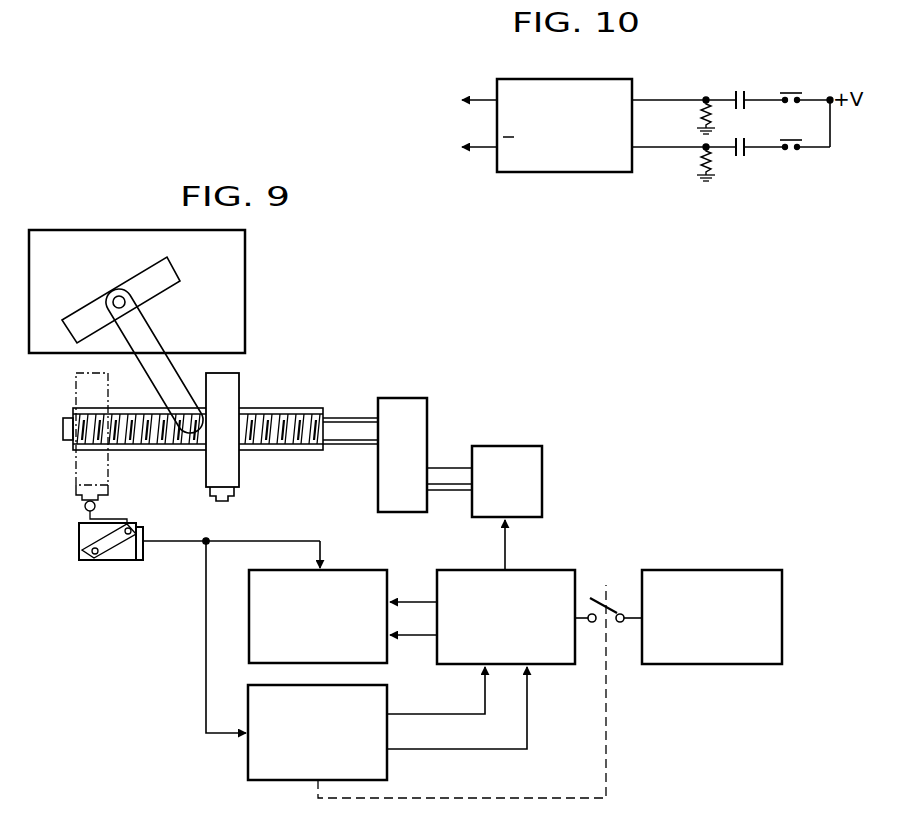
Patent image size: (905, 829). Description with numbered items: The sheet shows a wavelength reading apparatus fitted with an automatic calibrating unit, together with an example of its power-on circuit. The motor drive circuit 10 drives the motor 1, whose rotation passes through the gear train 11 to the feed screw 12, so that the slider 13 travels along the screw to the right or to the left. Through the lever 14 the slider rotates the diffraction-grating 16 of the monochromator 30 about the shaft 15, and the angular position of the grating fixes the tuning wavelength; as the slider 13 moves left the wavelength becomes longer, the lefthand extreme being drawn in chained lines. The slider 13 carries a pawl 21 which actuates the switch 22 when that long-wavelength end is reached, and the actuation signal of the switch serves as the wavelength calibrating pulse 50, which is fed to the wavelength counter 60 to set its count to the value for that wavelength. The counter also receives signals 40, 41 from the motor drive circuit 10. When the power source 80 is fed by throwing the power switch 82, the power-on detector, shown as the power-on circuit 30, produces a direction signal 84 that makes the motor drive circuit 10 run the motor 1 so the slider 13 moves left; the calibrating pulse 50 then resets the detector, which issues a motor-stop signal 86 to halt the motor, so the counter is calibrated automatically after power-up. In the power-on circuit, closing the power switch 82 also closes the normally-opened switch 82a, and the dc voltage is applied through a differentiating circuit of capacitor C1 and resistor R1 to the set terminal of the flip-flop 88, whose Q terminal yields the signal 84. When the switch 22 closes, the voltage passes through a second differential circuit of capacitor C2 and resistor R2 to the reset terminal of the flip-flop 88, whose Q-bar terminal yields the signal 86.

In FIG. 9, the motor 1 is at (503, 446).
In FIG. 9, the motor drive circuit 10 is at (533, 570).
In FIG. 9, the gear train 11 is at (397, 398).
In FIG. 9, the feed screw 12 is at (294, 408).
In FIG. 9, the slider 13 is at (239, 380).
In FIG. 9, the lever 14 is at (158, 345).
In FIG. 9, the shaft 15 is at (126, 304).
In FIG. 9, the diffraction-grating 16 is at (180, 268).
In FIG. 9, the pawl 21 is at (237, 492).
In FIG. 10, the switch 22 is at (789, 150).
In FIG. 9, the switch 22 is at (79, 541).
In FIG. 9, the monochromator / power-on circuit 30 is at (125, 230).
In FIG. 9, the count signal line 40 is at (420, 601).
In FIG. 9, the count signal line 41 is at (425, 636).
In FIG. 9, the wavelength calibrating pulse 50 is at (250, 541).
In FIG. 9, the wavelength counter 60 is at (338, 570).
In FIG. 9, the power source 80 is at (720, 570).
In FIG. 9, the power switch 82 is at (615, 600).
In FIG. 10, the normally-opened switch 82a is at (790, 92).
In FIG. 10, the direction signal 84 is at (467, 87).
In FIG. 9, the direction signal 84 is at (485, 699).
In FIG. 10, the motor-stop signal 86 is at (467, 134).
In FIG. 9, the motor-stop signal 86 is at (528, 700).
In FIG. 10, the flip-flop 88 is at (580, 79).
In FIG. 10, the capacitor C1 is at (744, 90).
In FIG. 10, the capacitor C2 is at (744, 138).
In FIG. 10, the resistor R1 is at (699, 114).
In FIG. 10, the resistor R2 is at (699, 161).